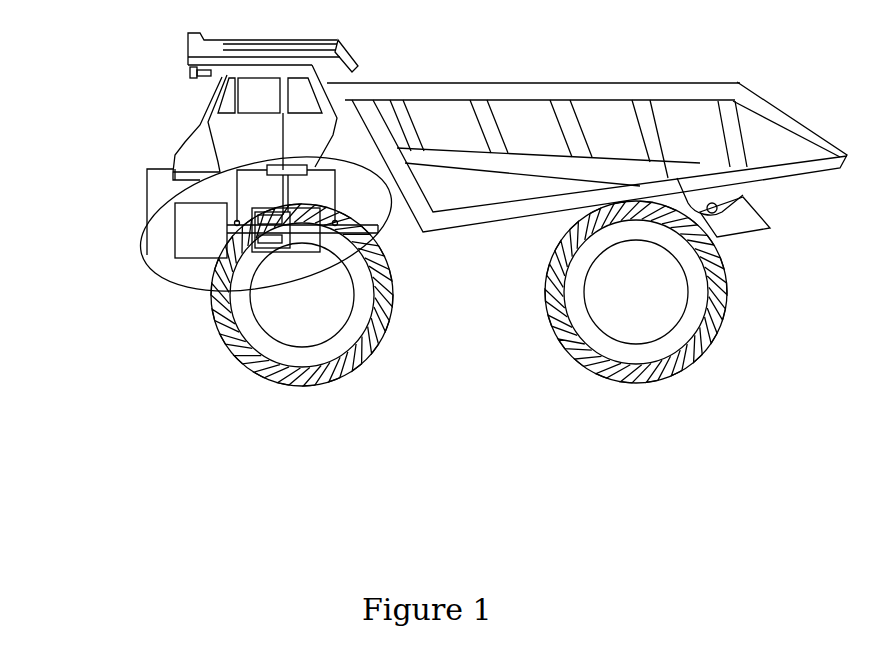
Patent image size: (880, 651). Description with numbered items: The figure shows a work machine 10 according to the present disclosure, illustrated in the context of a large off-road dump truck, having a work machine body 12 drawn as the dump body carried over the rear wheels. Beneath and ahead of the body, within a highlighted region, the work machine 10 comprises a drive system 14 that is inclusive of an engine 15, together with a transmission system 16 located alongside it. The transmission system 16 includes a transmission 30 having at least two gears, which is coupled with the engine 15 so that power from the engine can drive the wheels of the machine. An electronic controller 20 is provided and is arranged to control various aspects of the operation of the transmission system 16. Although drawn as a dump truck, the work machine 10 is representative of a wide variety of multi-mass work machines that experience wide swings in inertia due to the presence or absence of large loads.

The work machine 10 is at (102, 376).
The work machine body 12 is at (418, 95).
The drive system 14 is at (158, 281).
The engine 15 is at (183, 233).
The transmission system 16 is at (226, 274).
The electronic controller 20 is at (308, 167).
The transmission 30 is at (310, 240).